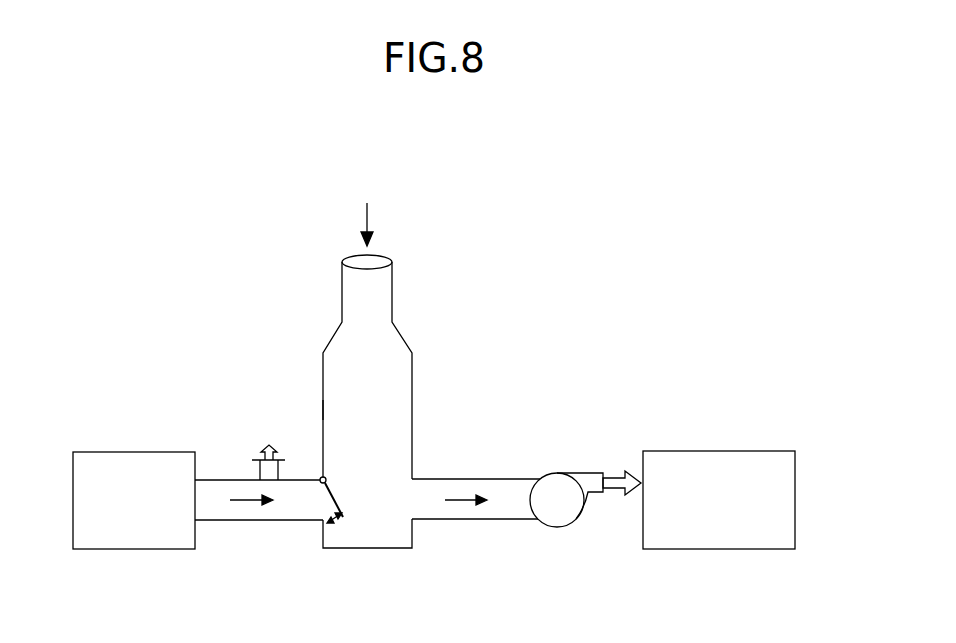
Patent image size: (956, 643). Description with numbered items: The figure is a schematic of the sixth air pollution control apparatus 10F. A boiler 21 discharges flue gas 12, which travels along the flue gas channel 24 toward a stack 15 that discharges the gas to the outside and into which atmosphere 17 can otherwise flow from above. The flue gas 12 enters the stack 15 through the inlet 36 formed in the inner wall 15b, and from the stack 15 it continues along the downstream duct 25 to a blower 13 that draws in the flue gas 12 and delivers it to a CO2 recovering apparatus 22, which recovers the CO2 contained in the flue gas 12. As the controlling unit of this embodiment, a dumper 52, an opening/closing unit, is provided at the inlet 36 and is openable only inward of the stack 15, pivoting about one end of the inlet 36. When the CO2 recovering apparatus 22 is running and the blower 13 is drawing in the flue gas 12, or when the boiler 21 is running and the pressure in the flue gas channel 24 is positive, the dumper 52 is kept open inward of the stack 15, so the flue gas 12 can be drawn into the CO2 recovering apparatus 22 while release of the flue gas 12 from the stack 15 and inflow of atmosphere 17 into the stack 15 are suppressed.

The sixth air pollution control apparatus 10F is at (231, 195).
The flue gas 12 is at (248, 503).
The blower 13 is at (562, 526).
The stack 15 is at (340, 289).
The inner wall 15b is at (323, 395).
The atmosphere 17 is at (367, 214).
The boiler 21 is at (86, 452).
The CO2 recovering apparatus 22 is at (702, 451).
The flue gas channel 24 is at (220, 523).
The flue gas duct 25 is at (477, 520).
The inlet 36 is at (323, 497).
The dumper 52 is at (338, 505).